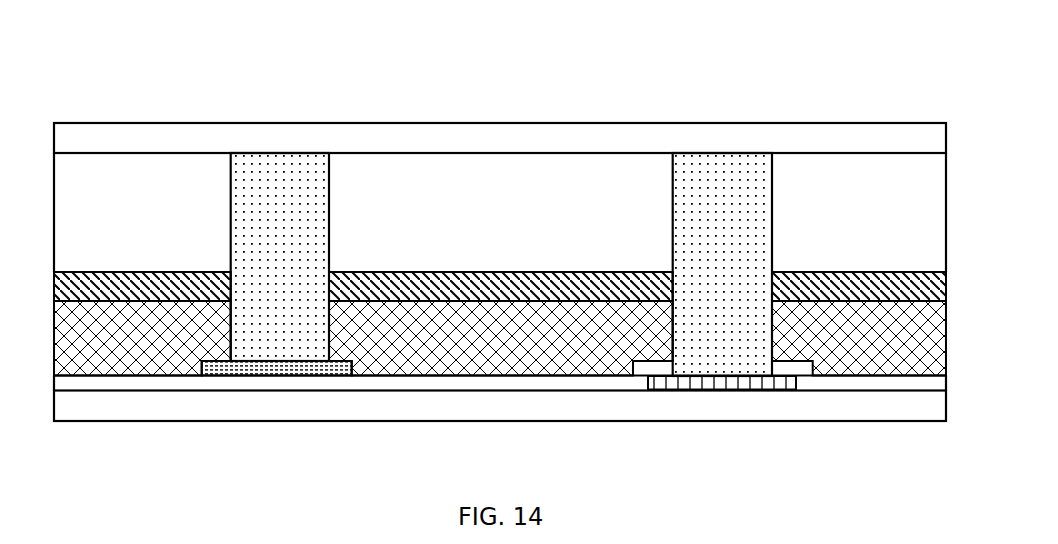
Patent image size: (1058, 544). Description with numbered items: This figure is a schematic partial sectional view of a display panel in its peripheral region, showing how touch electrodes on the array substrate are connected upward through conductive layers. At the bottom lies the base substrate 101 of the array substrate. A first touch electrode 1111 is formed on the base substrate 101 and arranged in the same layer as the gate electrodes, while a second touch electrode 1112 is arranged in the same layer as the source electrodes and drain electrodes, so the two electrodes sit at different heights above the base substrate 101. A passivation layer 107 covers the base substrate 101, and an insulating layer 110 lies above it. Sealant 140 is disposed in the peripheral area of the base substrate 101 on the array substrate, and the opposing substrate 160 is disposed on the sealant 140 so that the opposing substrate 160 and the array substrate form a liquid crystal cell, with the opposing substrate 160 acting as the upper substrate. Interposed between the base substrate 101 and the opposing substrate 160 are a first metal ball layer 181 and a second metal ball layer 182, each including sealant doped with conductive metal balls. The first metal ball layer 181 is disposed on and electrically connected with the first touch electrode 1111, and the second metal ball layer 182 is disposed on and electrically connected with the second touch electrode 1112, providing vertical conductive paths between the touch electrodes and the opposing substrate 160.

The opposing substrate 160 is at (88, 140).
The second metal ball layer 182 is at (252, 195).
The sealant 140 is at (416, 213).
The insulating layer 110 is at (500, 290).
The first metal ball layer 181 is at (718, 212).
The first touch electrode 1111 is at (268, 367).
The passivation layer 107 is at (452, 328).
The second touch electrode 1112 is at (719, 383).
The base substrate 101 is at (841, 404).